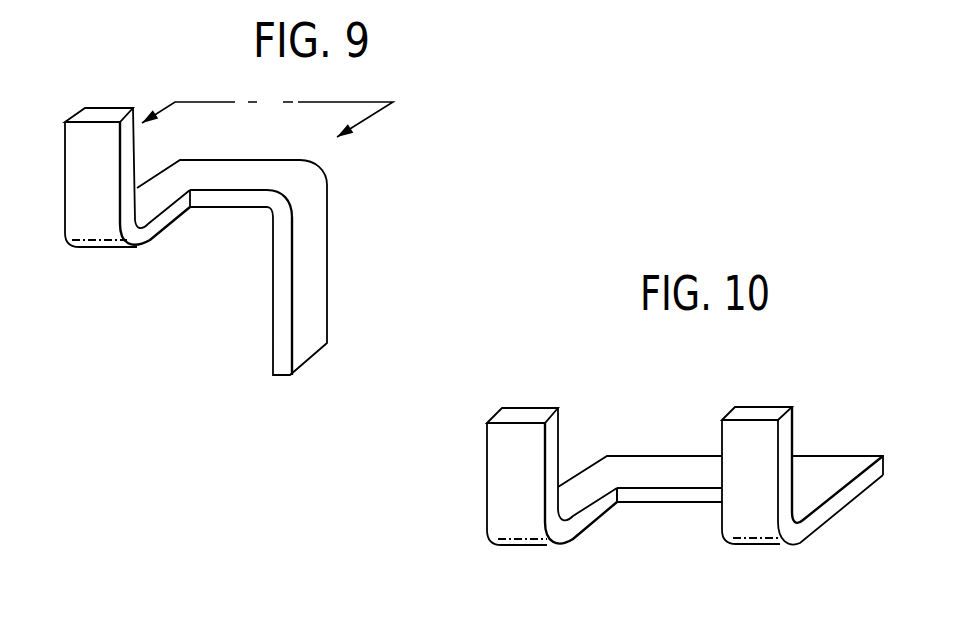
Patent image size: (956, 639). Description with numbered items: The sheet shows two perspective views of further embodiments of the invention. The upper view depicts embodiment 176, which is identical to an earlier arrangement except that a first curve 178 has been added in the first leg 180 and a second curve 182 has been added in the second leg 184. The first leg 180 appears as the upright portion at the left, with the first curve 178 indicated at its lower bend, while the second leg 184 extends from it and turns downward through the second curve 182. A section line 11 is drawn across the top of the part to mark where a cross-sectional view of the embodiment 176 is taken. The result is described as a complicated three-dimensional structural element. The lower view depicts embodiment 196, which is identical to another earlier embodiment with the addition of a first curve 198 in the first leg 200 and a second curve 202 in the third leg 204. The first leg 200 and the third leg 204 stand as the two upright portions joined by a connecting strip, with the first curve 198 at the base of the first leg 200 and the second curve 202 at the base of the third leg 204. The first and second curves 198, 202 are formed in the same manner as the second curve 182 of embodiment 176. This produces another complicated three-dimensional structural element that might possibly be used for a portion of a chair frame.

In FIG. 9, the embodiment 176 is at (186, 90).
In FIG. 9, the section line 11- 11 is at (400, 138).
In FIG. 9, the first leg 180 is at (65, 162).
In FIG. 9, the first curve 178 is at (110, 250).
In FIG. 9, the second curve 182 is at (323, 168).
In FIG. 9, the second leg 184 is at (327, 285).
In FIG. 10, the embodiment 196 is at (622, 394).
In FIG. 10, the first leg 200 is at (487, 468).
In FIG. 10, the first curve 198 is at (523, 547).
In FIG. 10, the third leg 204 is at (795, 433).
In FIG. 10, the second curve 202 is at (763, 547).